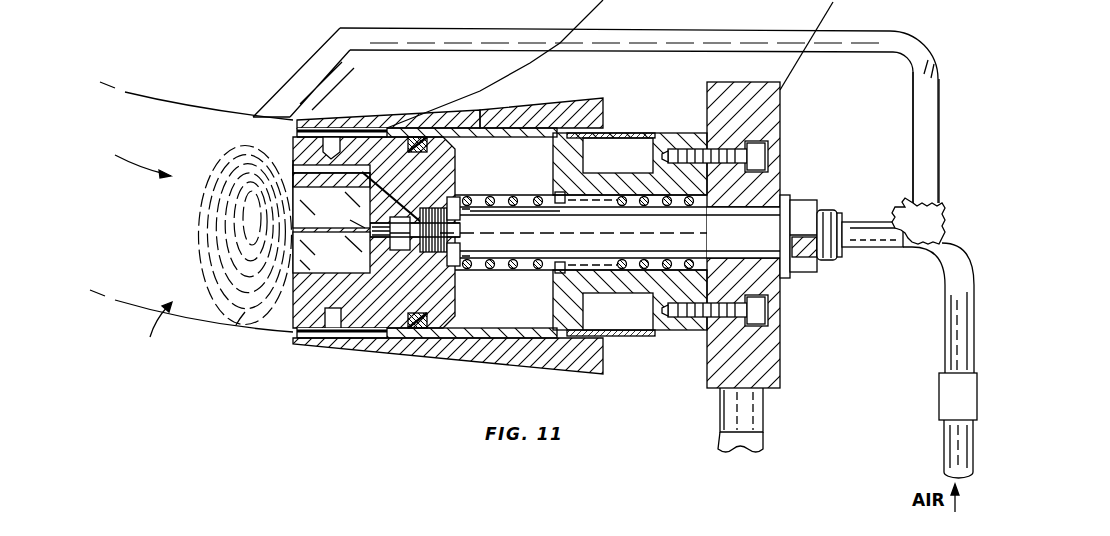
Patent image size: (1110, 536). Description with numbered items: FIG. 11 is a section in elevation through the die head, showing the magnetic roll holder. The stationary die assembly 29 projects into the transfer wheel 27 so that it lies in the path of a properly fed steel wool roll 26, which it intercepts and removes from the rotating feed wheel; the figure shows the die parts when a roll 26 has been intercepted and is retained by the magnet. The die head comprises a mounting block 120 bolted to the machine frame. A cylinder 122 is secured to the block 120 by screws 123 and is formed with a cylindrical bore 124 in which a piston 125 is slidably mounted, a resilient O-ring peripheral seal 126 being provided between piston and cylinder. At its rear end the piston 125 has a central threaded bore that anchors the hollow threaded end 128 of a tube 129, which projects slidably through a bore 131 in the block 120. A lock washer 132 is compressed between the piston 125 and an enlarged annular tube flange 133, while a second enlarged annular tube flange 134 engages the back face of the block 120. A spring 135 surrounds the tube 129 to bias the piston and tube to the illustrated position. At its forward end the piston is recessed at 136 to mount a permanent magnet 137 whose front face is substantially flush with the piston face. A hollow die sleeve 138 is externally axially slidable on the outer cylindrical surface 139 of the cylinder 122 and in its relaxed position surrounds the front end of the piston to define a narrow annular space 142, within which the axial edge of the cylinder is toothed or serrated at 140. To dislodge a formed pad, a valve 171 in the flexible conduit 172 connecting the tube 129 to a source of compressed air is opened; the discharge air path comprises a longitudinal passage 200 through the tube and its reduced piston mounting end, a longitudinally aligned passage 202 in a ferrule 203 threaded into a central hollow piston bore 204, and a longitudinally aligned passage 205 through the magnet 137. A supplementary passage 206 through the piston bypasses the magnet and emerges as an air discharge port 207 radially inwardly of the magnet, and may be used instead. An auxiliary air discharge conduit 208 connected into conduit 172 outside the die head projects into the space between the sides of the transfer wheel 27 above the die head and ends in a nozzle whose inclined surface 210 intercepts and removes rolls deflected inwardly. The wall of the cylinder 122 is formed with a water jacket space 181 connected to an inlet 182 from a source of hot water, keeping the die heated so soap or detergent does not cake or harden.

The steel wool roll 26 is at (240, 314).
The transfer wheel 27 is at (155, 333).
The stationary die assembly 29 is at (636, 95).
The mounting block 120 is at (781, 123).
The cylinder 122 is at (677, 136).
The screws 123 is at (782, 153).
The cylindrical bore 124 is at (496, 135).
The piston 125 is at (307, 316).
The resilient O-ring peripheral seal 126 is at (398, 358).
The hollow threaded end 128 is at (431, 210).
The tube 129 is at (515, 266).
The bore 131 is at (740, 258).
The lock washer 132 is at (449, 165).
The enlarged annular tube flange 133 is at (461, 246).
The second enlarged annular tube flange 134 is at (789, 196).
The spring 135 is at (520, 209).
The recess 136 is at (351, 274).
The permanent magnet 137 is at (345, 208).
The hollow die sleeve 138 is at (558, 108).
The outer cylindrical surface 139 is at (514, 219).
The toothed or serrated axial edge 140 is at (375, 124).
The narrow annular space 142 is at (363, 336).
The valve 171 is at (940, 385).
The flexible conduit 172 is at (948, 318).
The water jacket space 181 is at (624, 146).
The inlet 182 is at (758, 416).
The longitudinal passage 200 is at (617, 236).
The longitudinally aligned passage 202 is at (384, 182).
The ferrule 203 is at (397, 250).
The central hollow piston bore 204 is at (357, 272).
The longitudinally aligned passage 205 is at (296, 246).
The supplementary passage 206 is at (318, 168).
The air discharge port 207 is at (297, 168).
The auxiliary air discharge conduit 208 is at (681, 37).
The inclined surface 210 is at (308, 62).